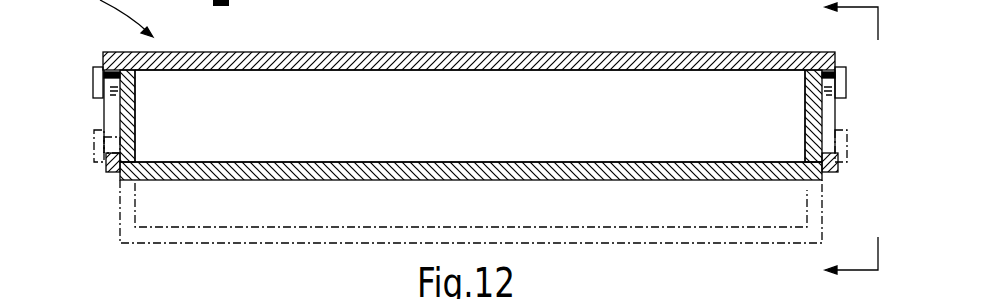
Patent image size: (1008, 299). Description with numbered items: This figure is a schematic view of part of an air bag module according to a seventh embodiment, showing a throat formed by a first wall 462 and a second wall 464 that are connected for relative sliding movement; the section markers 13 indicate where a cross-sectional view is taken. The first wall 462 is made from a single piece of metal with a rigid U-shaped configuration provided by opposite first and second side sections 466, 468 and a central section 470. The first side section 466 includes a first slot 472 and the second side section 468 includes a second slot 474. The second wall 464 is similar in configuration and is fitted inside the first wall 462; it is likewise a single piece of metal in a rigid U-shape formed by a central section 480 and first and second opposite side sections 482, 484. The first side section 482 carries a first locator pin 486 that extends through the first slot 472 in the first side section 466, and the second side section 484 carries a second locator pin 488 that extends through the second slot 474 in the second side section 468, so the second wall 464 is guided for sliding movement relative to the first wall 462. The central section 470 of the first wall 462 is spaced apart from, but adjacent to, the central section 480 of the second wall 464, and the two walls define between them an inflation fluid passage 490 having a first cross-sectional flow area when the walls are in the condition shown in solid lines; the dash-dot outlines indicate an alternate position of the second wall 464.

The section line 13- 13 is at (836, 141).
The first wall 462 is at (469, 114).
The second wall 464 is at (458, 156).
The first side section 466 is at (103, 112).
The second side section 468 is at (835, 110).
The central section 470 is at (642, 53).
The first slot 472 is at (115, 125).
The second slot 474 is at (845, 120).
The central section 480 is at (328, 162).
The first side section 482 is at (137, 120).
The second side section 484 is at (803, 122).
The first locator pin 486 is at (100, 82).
The second locator pin 488 is at (878, 77).
The inflation fluid passage 490 is at (585, 100).